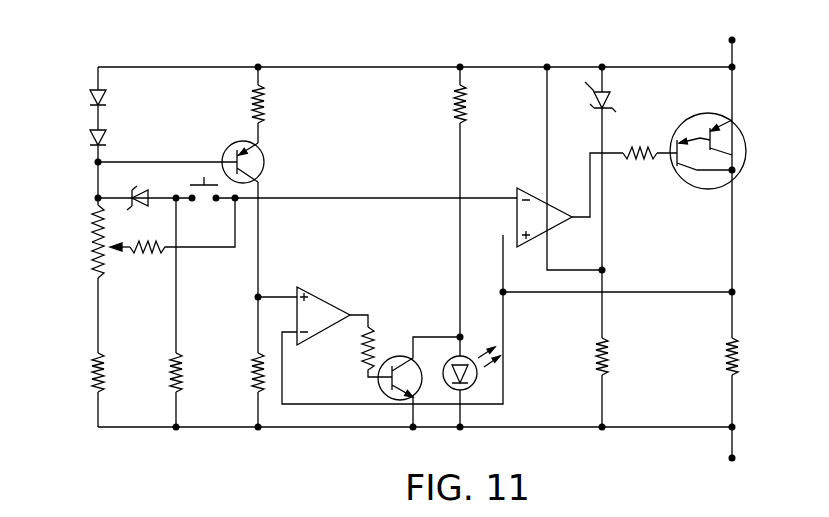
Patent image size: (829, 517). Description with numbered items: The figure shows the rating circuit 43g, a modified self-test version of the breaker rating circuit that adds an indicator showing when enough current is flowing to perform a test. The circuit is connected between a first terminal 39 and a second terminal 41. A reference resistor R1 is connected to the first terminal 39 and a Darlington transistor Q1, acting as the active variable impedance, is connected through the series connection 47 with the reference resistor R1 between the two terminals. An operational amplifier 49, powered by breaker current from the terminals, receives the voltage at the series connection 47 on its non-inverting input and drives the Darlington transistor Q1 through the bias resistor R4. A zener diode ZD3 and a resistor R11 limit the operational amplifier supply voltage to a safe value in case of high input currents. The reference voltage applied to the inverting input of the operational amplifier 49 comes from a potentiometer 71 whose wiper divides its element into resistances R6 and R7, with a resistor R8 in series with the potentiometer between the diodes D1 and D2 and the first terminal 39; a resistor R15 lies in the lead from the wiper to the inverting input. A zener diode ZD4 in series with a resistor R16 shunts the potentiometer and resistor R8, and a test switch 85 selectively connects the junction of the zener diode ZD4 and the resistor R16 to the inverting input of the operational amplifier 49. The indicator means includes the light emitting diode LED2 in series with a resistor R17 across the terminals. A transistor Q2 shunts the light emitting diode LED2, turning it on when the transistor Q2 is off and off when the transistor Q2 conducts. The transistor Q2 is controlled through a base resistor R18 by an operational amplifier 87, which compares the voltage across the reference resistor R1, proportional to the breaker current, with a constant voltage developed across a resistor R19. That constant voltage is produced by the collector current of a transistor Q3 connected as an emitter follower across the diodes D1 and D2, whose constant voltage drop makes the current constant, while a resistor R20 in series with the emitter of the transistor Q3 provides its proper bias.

The rating circuit 43g is at (524, 50).
The diode D1 is at (106, 97).
The diode D2 is at (106, 137).
The zener diode ZD4 is at (134, 190).
The resistance of potentiometer R6 is at (93, 215).
The resistance of potentiometer R7 is at (92, 268).
The potentiometer 71 is at (98, 247).
The resistor R15 is at (143, 253).
The test switch 85 is at (190, 185).
The resistor R8 is at (93, 375).
The resistor R16 is at (170, 373).
The resistor R19 is at (252, 373).
The resistor R20 is at (266, 110).
The resistor R17 is at (454, 113).
The transistor Q3 is at (262, 175).
The operational amplifier 87 is at (302, 290).
The base resistor R18 is at (376, 340).
The transistor Q2 is at (380, 389).
The light emitting diode LED2 is at (476, 380).
The operational amplifier 49 is at (562, 205).
The zener diode ZD3 is at (613, 109).
The bias resistor R4 is at (634, 146).
The Darlington transistor Q1 is at (746, 162).
The second terminal 41 is at (731, 40).
The series connection 47 is at (737, 294).
The reference resistor R1 is at (738, 355).
The resistor R11 is at (608, 362).
The first terminal 39 is at (736, 458).